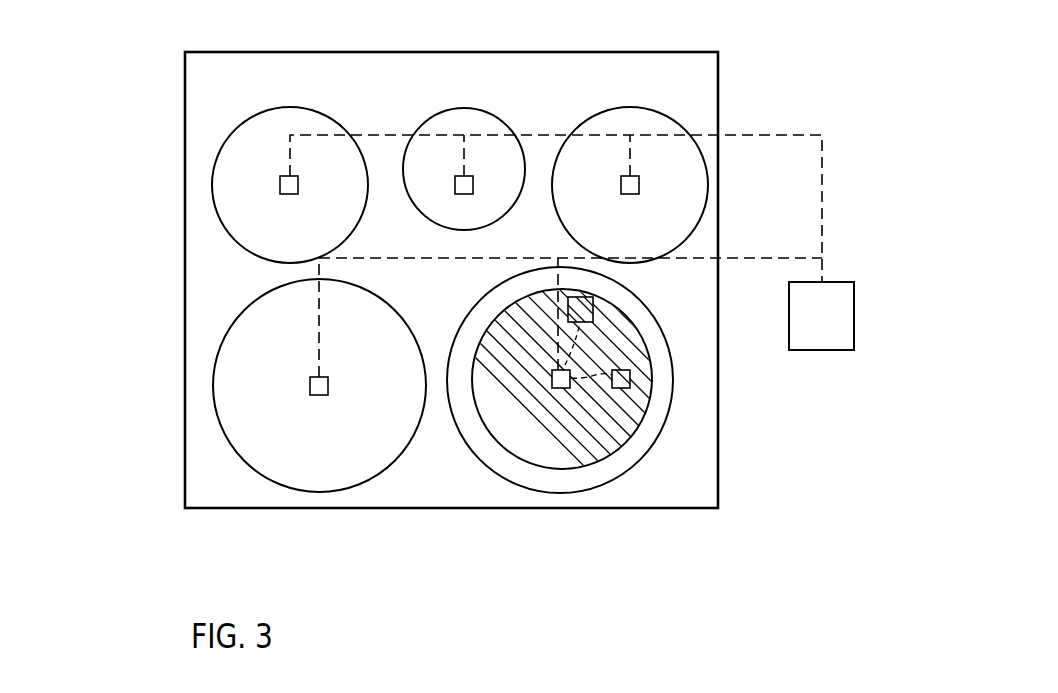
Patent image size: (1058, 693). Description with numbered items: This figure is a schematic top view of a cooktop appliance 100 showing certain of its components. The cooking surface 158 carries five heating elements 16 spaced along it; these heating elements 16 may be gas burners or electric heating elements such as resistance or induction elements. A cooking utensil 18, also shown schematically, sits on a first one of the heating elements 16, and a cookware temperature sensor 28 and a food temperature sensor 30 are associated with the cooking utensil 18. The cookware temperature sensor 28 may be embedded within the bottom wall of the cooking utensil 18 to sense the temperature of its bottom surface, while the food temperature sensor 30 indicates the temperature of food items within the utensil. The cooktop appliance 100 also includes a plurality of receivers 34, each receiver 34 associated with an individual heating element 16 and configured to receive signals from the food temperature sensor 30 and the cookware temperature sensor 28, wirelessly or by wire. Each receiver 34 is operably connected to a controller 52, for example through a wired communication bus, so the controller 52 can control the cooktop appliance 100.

The cooktop appliance 100 is at (138, 130).
The cooking surface 158 is at (200, 272).
The heating elements 16 is at (375, 477).
The cooking utensil 18 is at (645, 445).
The cookware temperature sensor 28 is at (631, 372).
The food temperature sensor 30 is at (597, 317).
The receiver 34 is at (474, 181).
The controller 52 is at (855, 315).